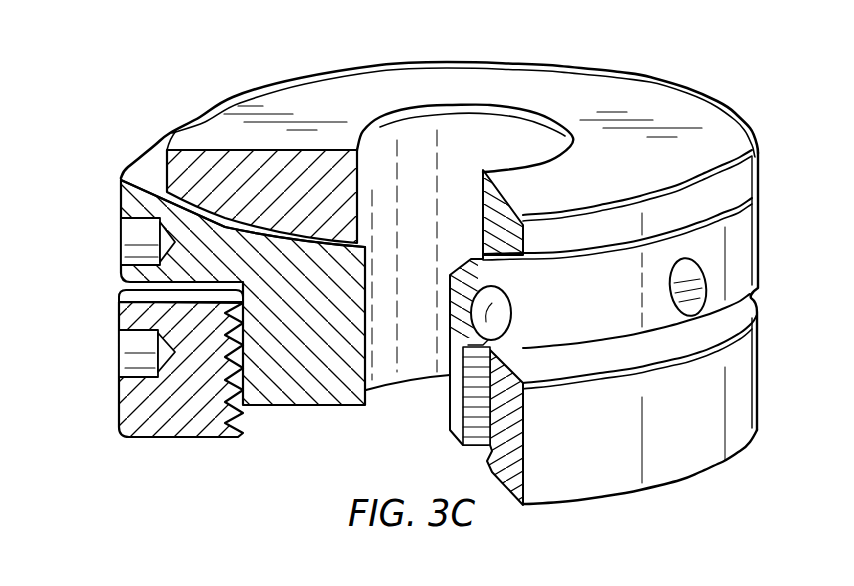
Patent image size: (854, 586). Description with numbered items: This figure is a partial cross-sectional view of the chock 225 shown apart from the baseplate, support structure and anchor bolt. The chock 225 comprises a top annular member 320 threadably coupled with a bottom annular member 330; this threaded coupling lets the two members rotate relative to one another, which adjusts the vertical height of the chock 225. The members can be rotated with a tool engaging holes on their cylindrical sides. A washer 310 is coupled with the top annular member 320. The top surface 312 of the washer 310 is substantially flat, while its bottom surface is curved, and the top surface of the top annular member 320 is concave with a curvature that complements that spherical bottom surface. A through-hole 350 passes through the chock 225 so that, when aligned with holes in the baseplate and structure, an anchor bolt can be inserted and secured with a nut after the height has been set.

The chock 225 is at (696, 52).
The washer 310 is at (215, 176).
The top surface 312 is at (295, 102).
The top annular member 320 is at (215, 245).
The bottom annular member 330 is at (152, 395).
The through-hole 350 is at (472, 142).